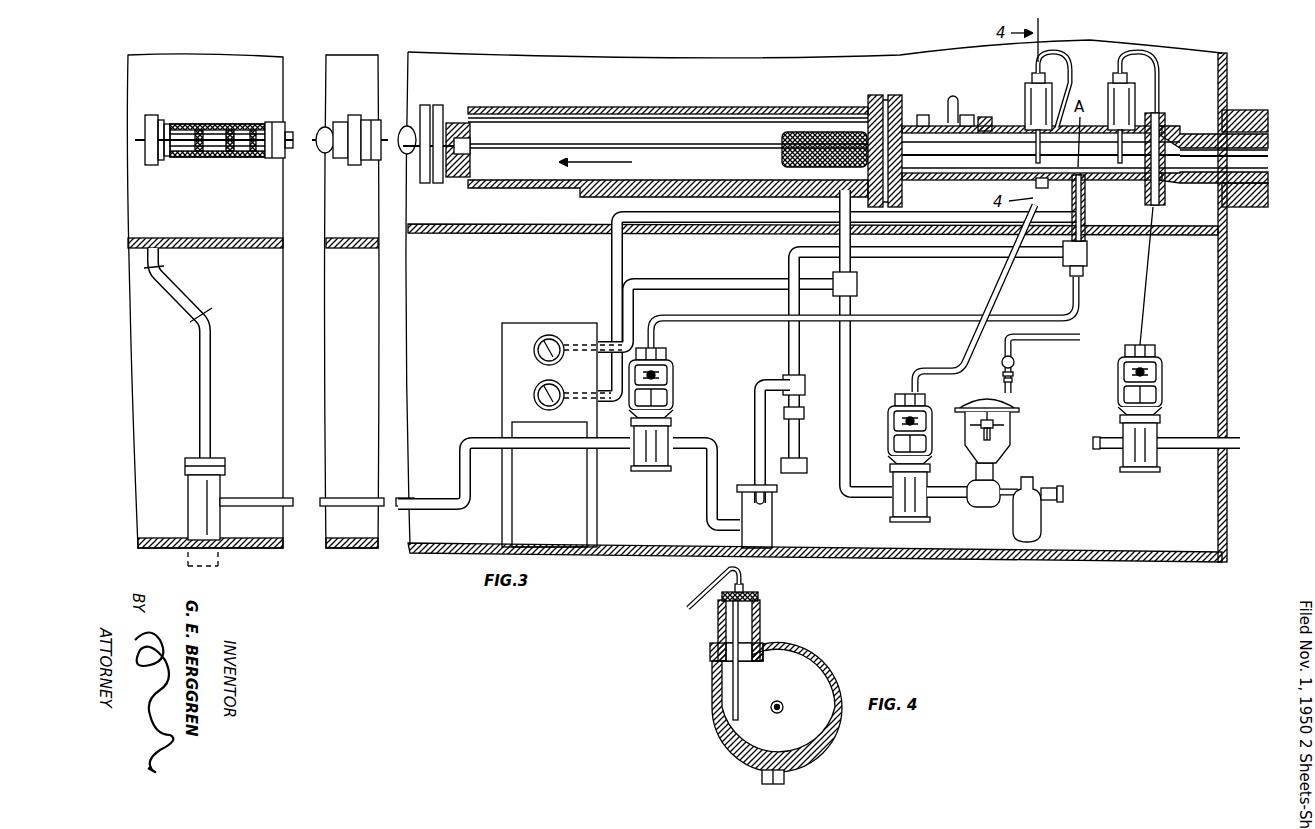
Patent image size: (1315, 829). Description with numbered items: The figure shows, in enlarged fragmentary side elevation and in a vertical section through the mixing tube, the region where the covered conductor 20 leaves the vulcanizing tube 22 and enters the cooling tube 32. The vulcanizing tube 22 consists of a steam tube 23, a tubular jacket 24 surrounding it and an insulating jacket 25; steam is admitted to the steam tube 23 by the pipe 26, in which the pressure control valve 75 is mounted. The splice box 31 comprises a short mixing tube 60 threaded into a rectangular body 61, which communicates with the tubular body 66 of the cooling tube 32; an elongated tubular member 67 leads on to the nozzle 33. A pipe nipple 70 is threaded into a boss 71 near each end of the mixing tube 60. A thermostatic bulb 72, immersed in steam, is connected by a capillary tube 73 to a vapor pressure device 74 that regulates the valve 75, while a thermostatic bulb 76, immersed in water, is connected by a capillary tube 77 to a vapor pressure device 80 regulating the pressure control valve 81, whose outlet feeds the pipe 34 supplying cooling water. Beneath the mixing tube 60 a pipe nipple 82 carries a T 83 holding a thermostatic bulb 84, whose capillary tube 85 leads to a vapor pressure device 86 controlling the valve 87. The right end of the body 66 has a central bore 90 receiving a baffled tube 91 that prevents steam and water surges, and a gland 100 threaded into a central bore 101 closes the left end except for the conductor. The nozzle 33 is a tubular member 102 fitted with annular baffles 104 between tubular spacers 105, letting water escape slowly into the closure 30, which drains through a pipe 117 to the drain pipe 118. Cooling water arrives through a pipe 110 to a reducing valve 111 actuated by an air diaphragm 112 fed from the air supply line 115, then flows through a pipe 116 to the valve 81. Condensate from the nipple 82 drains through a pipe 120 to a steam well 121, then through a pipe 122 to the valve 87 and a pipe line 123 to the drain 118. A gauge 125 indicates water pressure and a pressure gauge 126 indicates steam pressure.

In FIG. 3, the covered conductor 20 is at (620, 146).
In FIG. 3, the vulcanizing tube 22 is at (1273, 218).
In FIG. 3, the steam tube 23 is at (1268, 163).
In FIG. 3, the tubular jacket 24 is at (1268, 136).
In FIG. 3, the insulating jacket 25 is at (1268, 112).
In FIG. 3, the pipe 26 is at (1232, 440).
In FIG. 3, the closure 30 is at (1228, 60).
In FIG. 3, the splice box 31 is at (935, 104).
In FIG. 3, the cooling tube 32 is at (712, 100).
In FIG. 4, the cooling tube 32 is at (846, 666).
In FIG. 3, the nozzle 33 is at (195, 100).
In FIG. 3, the pipe 34 is at (852, 331).
In FIG. 3, the mixing tube 60 is at (1046, 186).
In FIG. 3, the rectangular body 61 is at (958, 181).
In FIG. 3, the tubular body 66 is at (582, 192).
In FIG. 3, the elongated tubular member 67 is at (358, 166).
In FIG. 3, the pipe nipple 70 is at (1025, 100).
In FIG. 4, the pipe nipple 70 is at (718, 618).
In FIG. 4, the boss 71 is at (710, 647).
In FIG. 3, the thermostatic bulb 72 is at (1112, 96).
In FIG. 3, the capillary tube 73 is at (1160, 72).
In FIG. 3, the vapor pressure device 74 is at (1152, 347).
In FIG. 3, the pressure control valve 75 is at (1158, 470).
In FIG. 3, the thermostatic bulb 76 is at (1033, 82).
In FIG. 4, the thermostatic bulb 76 is at (760, 599).
In FIG. 3, the capillary tube 77 is at (1000, 292).
In FIG. 4, the capillary tube 77 is at (743, 578).
In FIG. 3, the vapor pressure device 80 is at (898, 396).
In FIG. 3, the pressure control valve 81 is at (892, 512).
In FIG. 3, the pipe nipple 82 is at (1087, 193).
In FIG. 4, the pipe nipple 82 is at (786, 778).
In FIG. 3, the T 83 is at (1088, 256).
In FIG. 3, the thermostatic bulb 84 is at (1083, 277).
In FIG. 3, the capillary tube 85 is at (893, 315).
In FIG. 3, the vapor pressure device 86 is at (668, 355).
In FIG. 3, the valve 87 is at (669, 470).
In FIG. 3, the central bore 90 is at (865, 140).
In FIG. 3, the baffled tube 91 is at (776, 157).
In FIG. 3, the gland 100 is at (488, 153).
In FIG. 3, the central bore 101 is at (458, 177).
In FIG. 3, the tubular member 102 is at (276, 160).
In FIG. 3, the annular baffles 104 is at (238, 156).
In FIG. 3, the tubular spacers 105 is at (212, 125).
In FIG. 3, the pipe 110 is at (1054, 486).
In FIG. 3, the reducing valve 111 is at (986, 505).
In FIG. 3, the air diaphragm 112 is at (1016, 400).
In FIG. 3, the supply line 115 is at (1048, 341).
In FIG. 3, the pipe 116 is at (946, 500).
In FIG. 3, the pipe 117 is at (213, 368).
In FIG. 3, the drain pipe 118 is at (221, 522).
In FIG. 3, the pipe 120 is at (940, 260).
In FIG. 3, the steam well 121 is at (771, 506).
In FIG. 3, the pipe 122 is at (754, 448).
In FIG. 3, the pipe line 123 is at (550, 447).
In FIG. 3, the gauge 125 is at (534, 350).
In FIG. 3, the pressure gauge 126 is at (534, 395).